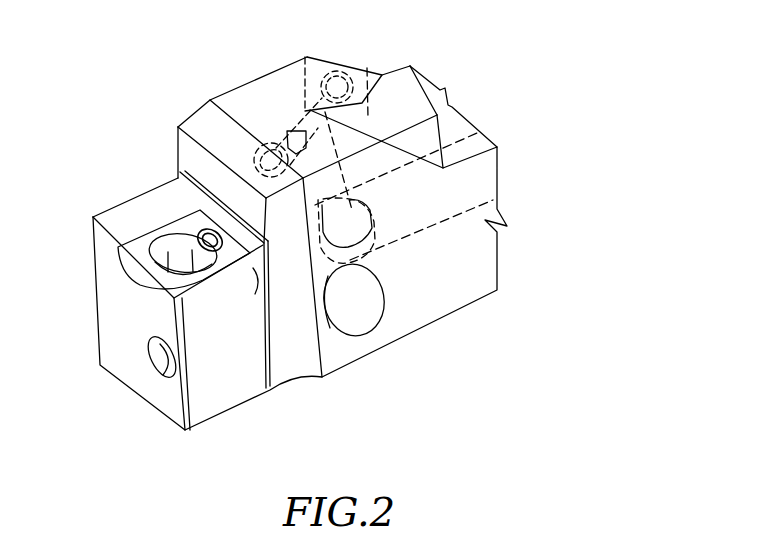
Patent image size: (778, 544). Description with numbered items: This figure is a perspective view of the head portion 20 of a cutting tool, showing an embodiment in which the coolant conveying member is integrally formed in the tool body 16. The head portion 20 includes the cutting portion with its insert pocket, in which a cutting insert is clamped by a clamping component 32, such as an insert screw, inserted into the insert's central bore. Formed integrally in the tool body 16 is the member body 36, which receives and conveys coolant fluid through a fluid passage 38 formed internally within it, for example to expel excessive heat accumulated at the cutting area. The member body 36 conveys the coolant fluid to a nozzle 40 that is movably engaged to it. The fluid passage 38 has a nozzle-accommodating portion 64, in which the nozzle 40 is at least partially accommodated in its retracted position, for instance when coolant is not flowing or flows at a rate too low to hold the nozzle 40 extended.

The tool body 16 is at (505, 171).
The head portion 20 is at (390, 64).
The clamping component 32 is at (185, 248).
The member body 36 is at (247, 96).
The fluid passage 38 is at (320, 153).
The nozzle 40 is at (212, 212).
The nozzle-accommodating portion 64 is at (300, 118).